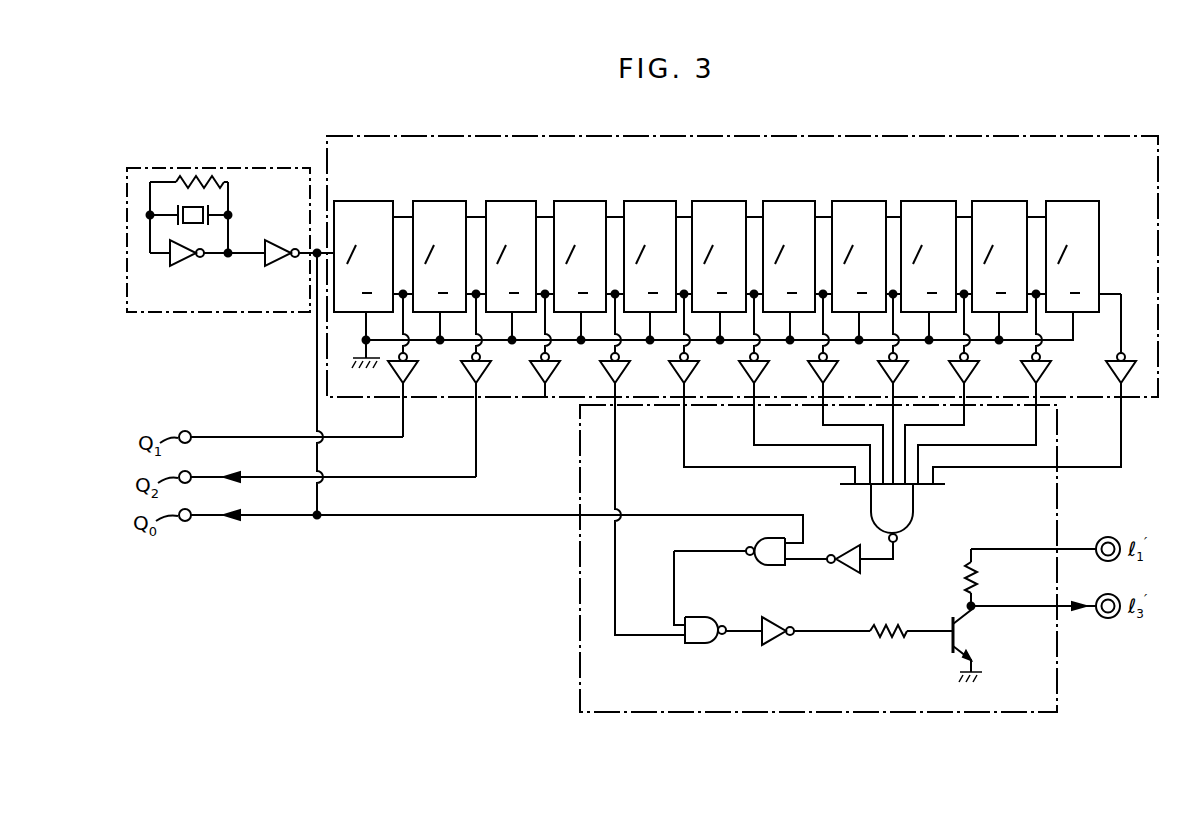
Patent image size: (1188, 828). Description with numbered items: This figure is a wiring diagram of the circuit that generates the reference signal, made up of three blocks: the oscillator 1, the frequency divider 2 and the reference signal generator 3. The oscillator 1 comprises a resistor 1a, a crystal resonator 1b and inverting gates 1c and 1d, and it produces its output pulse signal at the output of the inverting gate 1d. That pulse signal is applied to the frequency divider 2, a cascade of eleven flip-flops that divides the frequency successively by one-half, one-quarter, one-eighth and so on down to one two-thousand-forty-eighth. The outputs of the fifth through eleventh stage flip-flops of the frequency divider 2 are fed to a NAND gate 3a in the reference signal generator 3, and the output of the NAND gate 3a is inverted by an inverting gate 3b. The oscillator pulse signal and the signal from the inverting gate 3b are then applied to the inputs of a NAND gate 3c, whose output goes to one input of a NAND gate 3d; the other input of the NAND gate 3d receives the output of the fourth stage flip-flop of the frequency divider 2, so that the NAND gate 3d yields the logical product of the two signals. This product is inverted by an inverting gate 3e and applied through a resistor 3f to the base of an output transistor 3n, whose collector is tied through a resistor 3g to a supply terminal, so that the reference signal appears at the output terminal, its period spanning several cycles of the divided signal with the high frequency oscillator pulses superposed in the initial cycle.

The oscillator 1 is at (258, 168).
The resistor 1a is at (200, 176).
The crystal resonator 1b is at (210, 210).
The inverting gate 1c is at (203, 258).
The inverting gate 1d is at (284, 249).
The frequency divider 2 is at (540, 136).
The reference signal generator 3 is at (580, 647).
The NAND gate 3a is at (913, 499).
The inverting gate 3b is at (850, 574).
The NAND gate 3c is at (778, 566).
The NAND gate 3d is at (716, 644).
The inverting gate 3e is at (782, 646).
The resistor 3f is at (893, 637).
The resistor 3g is at (978, 578).
The transistor 3n is at (966, 636).